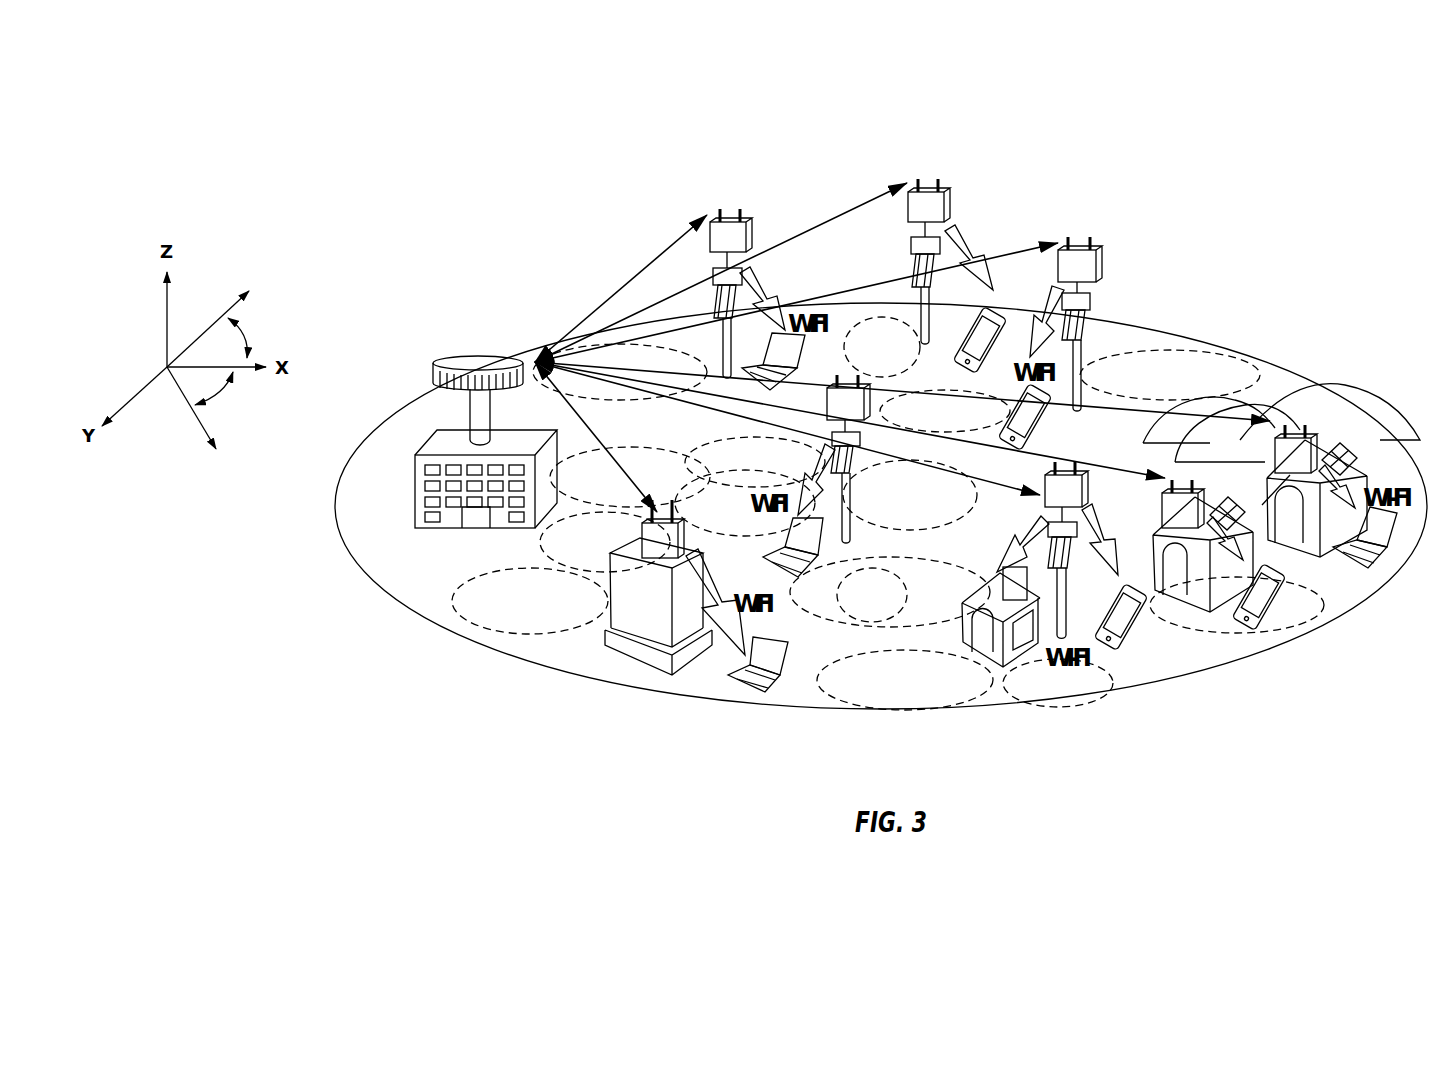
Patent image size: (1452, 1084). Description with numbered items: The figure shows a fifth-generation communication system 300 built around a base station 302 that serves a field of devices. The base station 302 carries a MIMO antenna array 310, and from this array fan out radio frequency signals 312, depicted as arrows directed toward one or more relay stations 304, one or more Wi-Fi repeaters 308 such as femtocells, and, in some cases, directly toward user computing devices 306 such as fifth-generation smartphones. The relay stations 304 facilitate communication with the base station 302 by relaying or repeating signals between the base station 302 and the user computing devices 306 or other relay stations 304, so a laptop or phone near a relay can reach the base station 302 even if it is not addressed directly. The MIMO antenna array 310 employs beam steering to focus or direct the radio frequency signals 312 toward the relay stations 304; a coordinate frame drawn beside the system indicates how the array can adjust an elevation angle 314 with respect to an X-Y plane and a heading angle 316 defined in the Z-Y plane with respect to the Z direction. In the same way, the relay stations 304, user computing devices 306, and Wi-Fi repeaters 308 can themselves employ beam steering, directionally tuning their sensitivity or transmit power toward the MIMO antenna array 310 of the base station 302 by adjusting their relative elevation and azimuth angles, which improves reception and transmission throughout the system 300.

The 5G communication system 300 is at (291, 162).
The base station 302 is at (413, 472).
The relay station 304 is at (730, 210).
The user computing device 306 is at (782, 332).
The Wi-Fi repeater 308 is at (1300, 435).
The MIMO antenna array 310 is at (432, 374).
The radio frequency signals 312 is at (590, 376).
The elevation angle 314 is at (250, 338).
The heading angle 316 is at (222, 393).